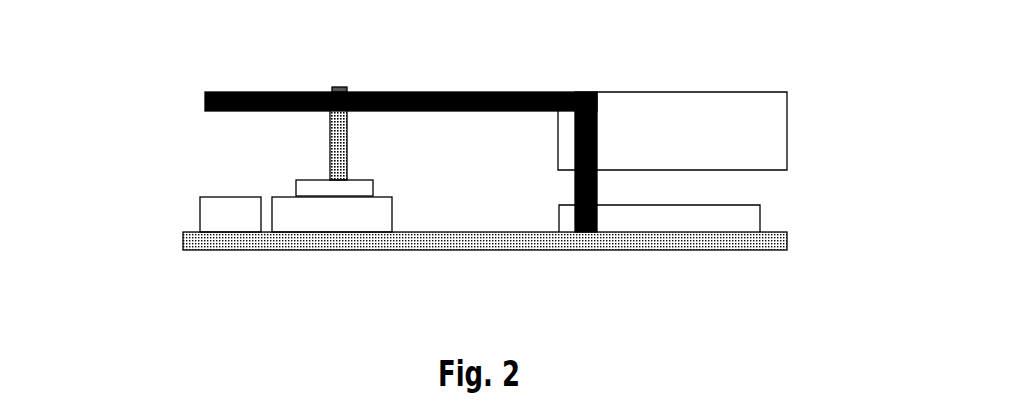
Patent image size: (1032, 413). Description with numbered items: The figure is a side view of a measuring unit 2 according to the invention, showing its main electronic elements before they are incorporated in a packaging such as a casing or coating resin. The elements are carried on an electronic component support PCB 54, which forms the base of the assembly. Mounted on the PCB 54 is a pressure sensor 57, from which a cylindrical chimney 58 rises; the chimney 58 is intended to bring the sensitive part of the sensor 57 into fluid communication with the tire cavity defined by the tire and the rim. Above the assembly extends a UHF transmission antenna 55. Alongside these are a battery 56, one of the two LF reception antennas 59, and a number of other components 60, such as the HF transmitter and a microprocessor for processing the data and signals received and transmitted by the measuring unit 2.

The measuring unit 2 is at (212, 170).
The electronic component support PCB 54 is at (393, 240).
The UHF transmission antenna 55 is at (248, 92).
The battery 56 is at (750, 134).
The pressure sensor 57 is at (463, 273).
The cylindrical chimney 58 is at (345, 152).
The LF reception antenna 59 is at (227, 217).
The other components 60 is at (732, 215).